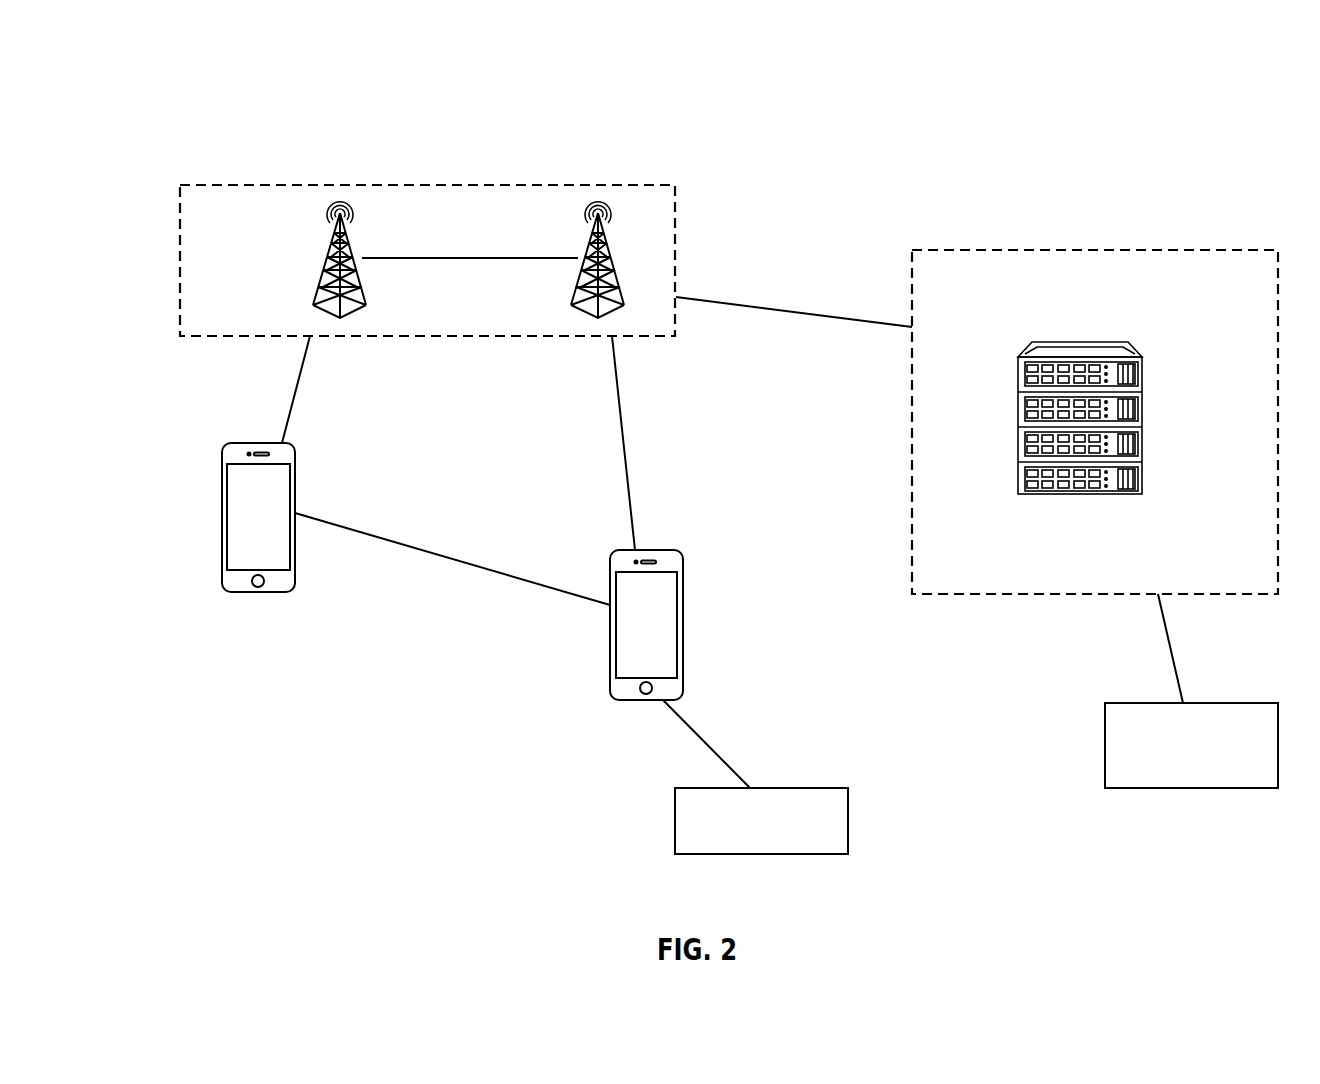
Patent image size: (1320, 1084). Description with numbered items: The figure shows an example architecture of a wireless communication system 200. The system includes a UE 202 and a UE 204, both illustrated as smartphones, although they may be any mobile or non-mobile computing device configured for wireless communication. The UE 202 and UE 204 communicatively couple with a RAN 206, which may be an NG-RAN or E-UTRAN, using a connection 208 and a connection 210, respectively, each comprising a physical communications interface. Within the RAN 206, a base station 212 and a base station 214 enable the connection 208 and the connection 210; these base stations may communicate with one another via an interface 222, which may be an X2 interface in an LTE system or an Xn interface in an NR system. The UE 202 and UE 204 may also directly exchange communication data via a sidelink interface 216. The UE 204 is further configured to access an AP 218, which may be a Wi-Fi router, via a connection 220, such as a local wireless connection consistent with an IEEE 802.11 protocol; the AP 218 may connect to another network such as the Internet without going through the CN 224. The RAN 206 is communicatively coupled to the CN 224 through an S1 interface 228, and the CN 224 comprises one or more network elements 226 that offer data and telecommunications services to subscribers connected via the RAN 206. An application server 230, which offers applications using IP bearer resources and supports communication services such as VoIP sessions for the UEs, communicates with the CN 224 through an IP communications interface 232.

The wireless communication system 200 is at (1195, 104).
The UE 202 is at (222, 473).
The UE 204 is at (683, 587).
The RAN 206 is at (430, 185).
The connection 208 is at (300, 378).
The connection 210 is at (618, 423).
The base station 212 is at (337, 222).
The base station 214 is at (595, 222).
The sidelink interface 216 is at (443, 556).
The AP 218 is at (675, 835).
The connection 220 is at (697, 735).
The interface 222 is at (420, 260).
The CN 224 is at (1098, 250).
The network elements 226 is at (1142, 377).
The S1 interface 228 is at (760, 307).
The application server 230 is at (1105, 720).
The IP communications interface 232 is at (1172, 662).